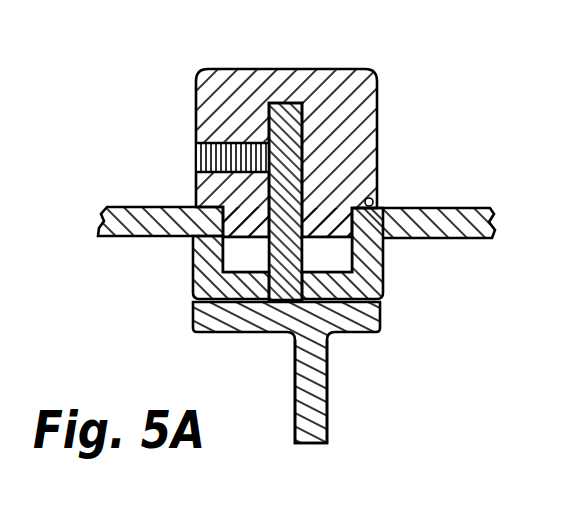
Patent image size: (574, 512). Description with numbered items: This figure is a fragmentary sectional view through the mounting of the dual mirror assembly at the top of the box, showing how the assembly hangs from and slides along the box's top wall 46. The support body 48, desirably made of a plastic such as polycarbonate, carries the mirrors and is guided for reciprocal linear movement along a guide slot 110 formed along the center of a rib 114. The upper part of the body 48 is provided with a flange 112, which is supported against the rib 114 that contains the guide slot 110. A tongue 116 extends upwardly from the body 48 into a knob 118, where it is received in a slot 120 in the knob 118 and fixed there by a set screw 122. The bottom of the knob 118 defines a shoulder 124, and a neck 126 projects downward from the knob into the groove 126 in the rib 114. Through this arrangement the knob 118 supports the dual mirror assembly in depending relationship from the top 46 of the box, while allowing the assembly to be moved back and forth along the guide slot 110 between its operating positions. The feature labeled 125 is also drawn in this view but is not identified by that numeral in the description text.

The top wall 46 is at (480, 208).
The support body 48 is at (330, 388).
The guide slot 110 is at (302, 283).
The flange 112 is at (380, 313).
The rib 114 is at (383, 268).
The tongue 116 is at (296, 188).
The knob 118 is at (377, 108).
The slot 120 is at (296, 103).
The set screw 122 is at (218, 143).
The shoulder 124 is at (377, 204).
The bore 125 is at (247, 232).
The neck 126 is at (204, 272).